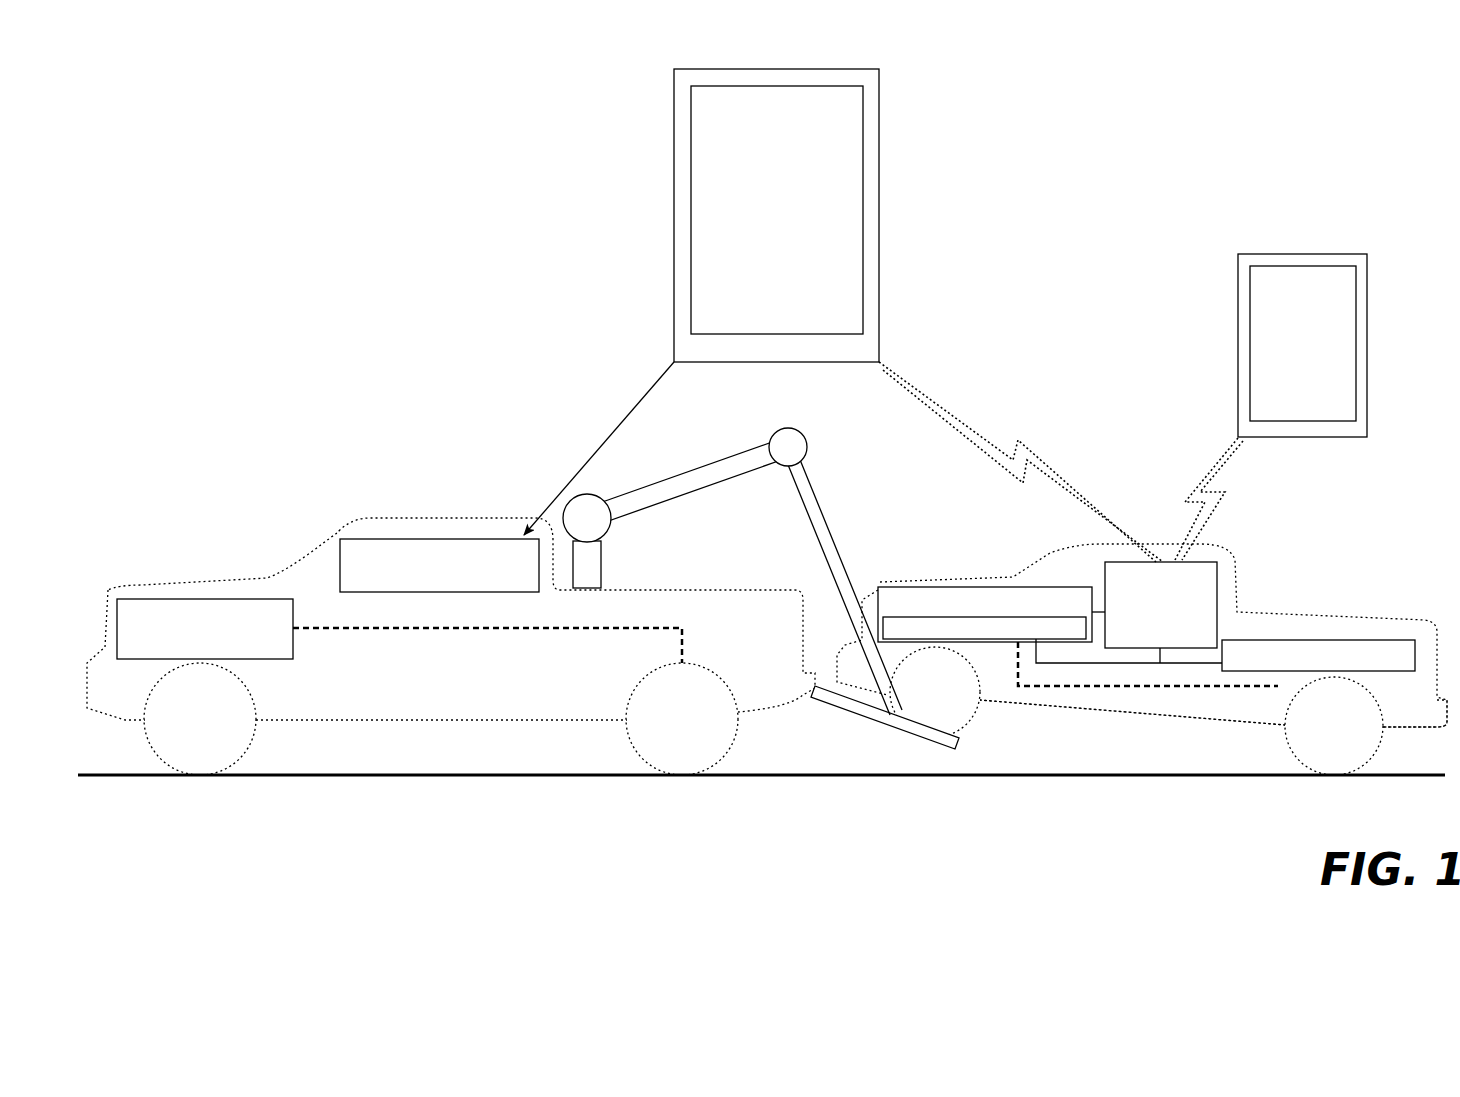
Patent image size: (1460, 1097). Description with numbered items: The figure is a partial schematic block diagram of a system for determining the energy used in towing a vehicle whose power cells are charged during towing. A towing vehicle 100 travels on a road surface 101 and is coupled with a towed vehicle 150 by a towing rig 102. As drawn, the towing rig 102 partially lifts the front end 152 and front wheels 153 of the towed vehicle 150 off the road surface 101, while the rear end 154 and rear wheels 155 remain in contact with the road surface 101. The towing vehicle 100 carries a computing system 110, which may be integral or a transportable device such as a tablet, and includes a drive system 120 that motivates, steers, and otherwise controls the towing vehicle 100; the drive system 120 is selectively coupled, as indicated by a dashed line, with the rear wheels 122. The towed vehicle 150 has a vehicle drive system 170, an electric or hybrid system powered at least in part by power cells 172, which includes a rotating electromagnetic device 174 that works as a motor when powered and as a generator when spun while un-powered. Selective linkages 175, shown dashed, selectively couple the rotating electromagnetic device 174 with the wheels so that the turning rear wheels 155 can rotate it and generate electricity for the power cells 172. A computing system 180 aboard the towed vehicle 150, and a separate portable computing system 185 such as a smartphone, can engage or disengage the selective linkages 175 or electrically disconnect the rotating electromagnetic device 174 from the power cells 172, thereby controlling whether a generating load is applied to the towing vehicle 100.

The towing vehicle 100 is at (164, 495).
The road surface 101 is at (130, 779).
The towing rig 102 is at (828, 488).
The computing system 110 is at (880, 89).
The drive system 120 is at (399, 687).
The rear wheels 122 is at (627, 742).
The towed vehicle 150 is at (913, 540).
The front end 152 is at (1021, 747).
The front wheels 153 is at (978, 719).
The rear end 154 is at (1409, 742).
The rear wheels 155 is at (1288, 742).
The vehicle drive system 170 is at (991, 614).
The power cells 172 is at (1318, 655).
The rotating electromagnetic device 174 is at (1052, 640).
The selective linkages 175 is at (1272, 689).
The computing system 180 is at (1161, 612).
The separate computing system 185 is at (1368, 276).